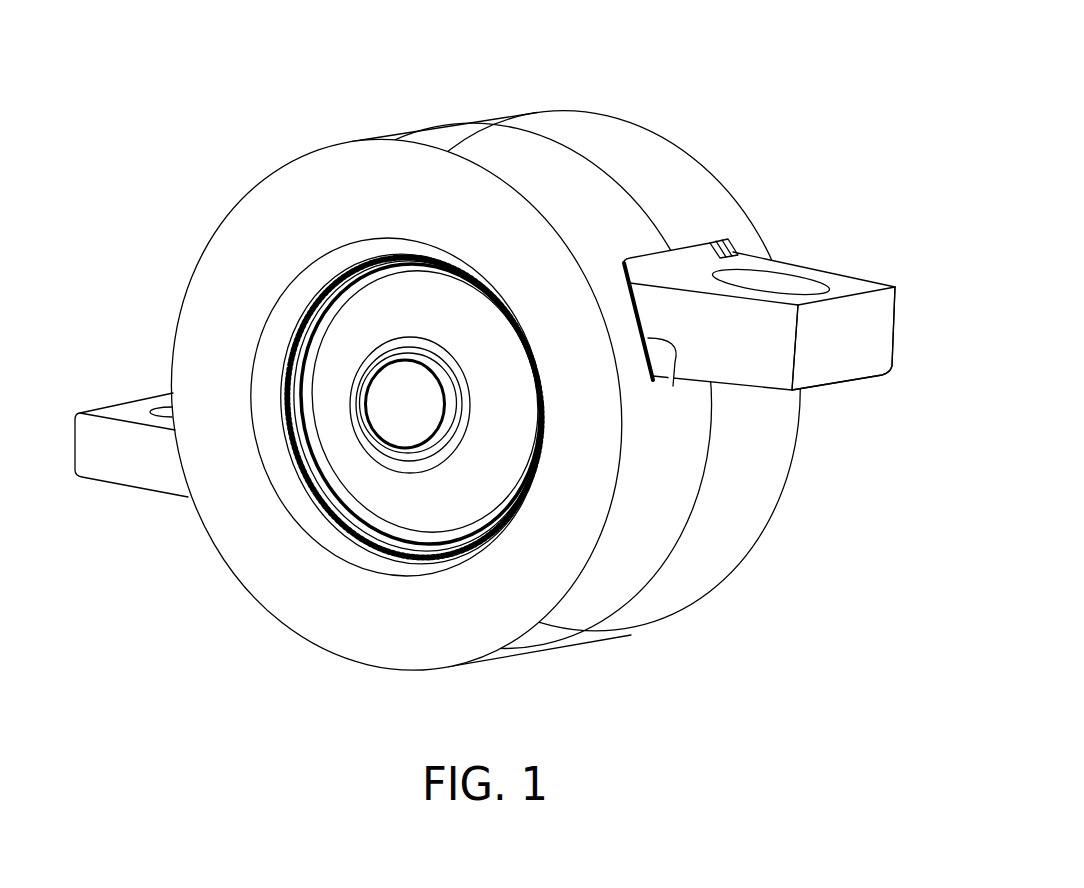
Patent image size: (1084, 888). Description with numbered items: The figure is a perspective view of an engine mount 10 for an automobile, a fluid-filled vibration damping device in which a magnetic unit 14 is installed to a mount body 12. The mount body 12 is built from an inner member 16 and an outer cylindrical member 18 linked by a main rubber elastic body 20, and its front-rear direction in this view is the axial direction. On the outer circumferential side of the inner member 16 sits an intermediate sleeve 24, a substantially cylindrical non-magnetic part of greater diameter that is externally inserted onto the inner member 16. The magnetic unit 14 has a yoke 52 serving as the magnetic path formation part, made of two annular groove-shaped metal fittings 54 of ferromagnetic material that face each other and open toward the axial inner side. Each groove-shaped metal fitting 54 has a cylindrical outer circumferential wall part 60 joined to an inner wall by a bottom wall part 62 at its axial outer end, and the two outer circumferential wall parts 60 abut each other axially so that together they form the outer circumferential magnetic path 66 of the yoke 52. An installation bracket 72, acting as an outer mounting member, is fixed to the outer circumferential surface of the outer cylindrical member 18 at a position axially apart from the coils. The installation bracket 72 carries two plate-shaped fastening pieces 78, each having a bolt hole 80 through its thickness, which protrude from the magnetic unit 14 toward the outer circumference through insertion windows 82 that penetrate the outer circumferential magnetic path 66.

The engine mount 10 is at (784, 136).
The mount body 12 is at (301, 291).
The magnetic unit 14 is at (331, 141).
The inner member 16 is at (362, 430).
The outer cylindrical member 18 is at (283, 368).
The main rubber elastic body 20 is at (410, 505).
The intermediate sleeve 24 is at (338, 277).
The yoke 52 is at (579, 356).
The groove-shaped metal fitting 54 is at (610, 221).
The outer circumferential wall part 60 is at (505, 157).
The bottom wall part 62 is at (440, 195).
The outer circumferential magnetic path 66 is at (489, 347).
The installation bracket 72 is at (774, 286).
The fastening piece 78 is at (135, 458).
The bolt hole 80 is at (792, 290).
The insertion window 82 is at (675, 362).